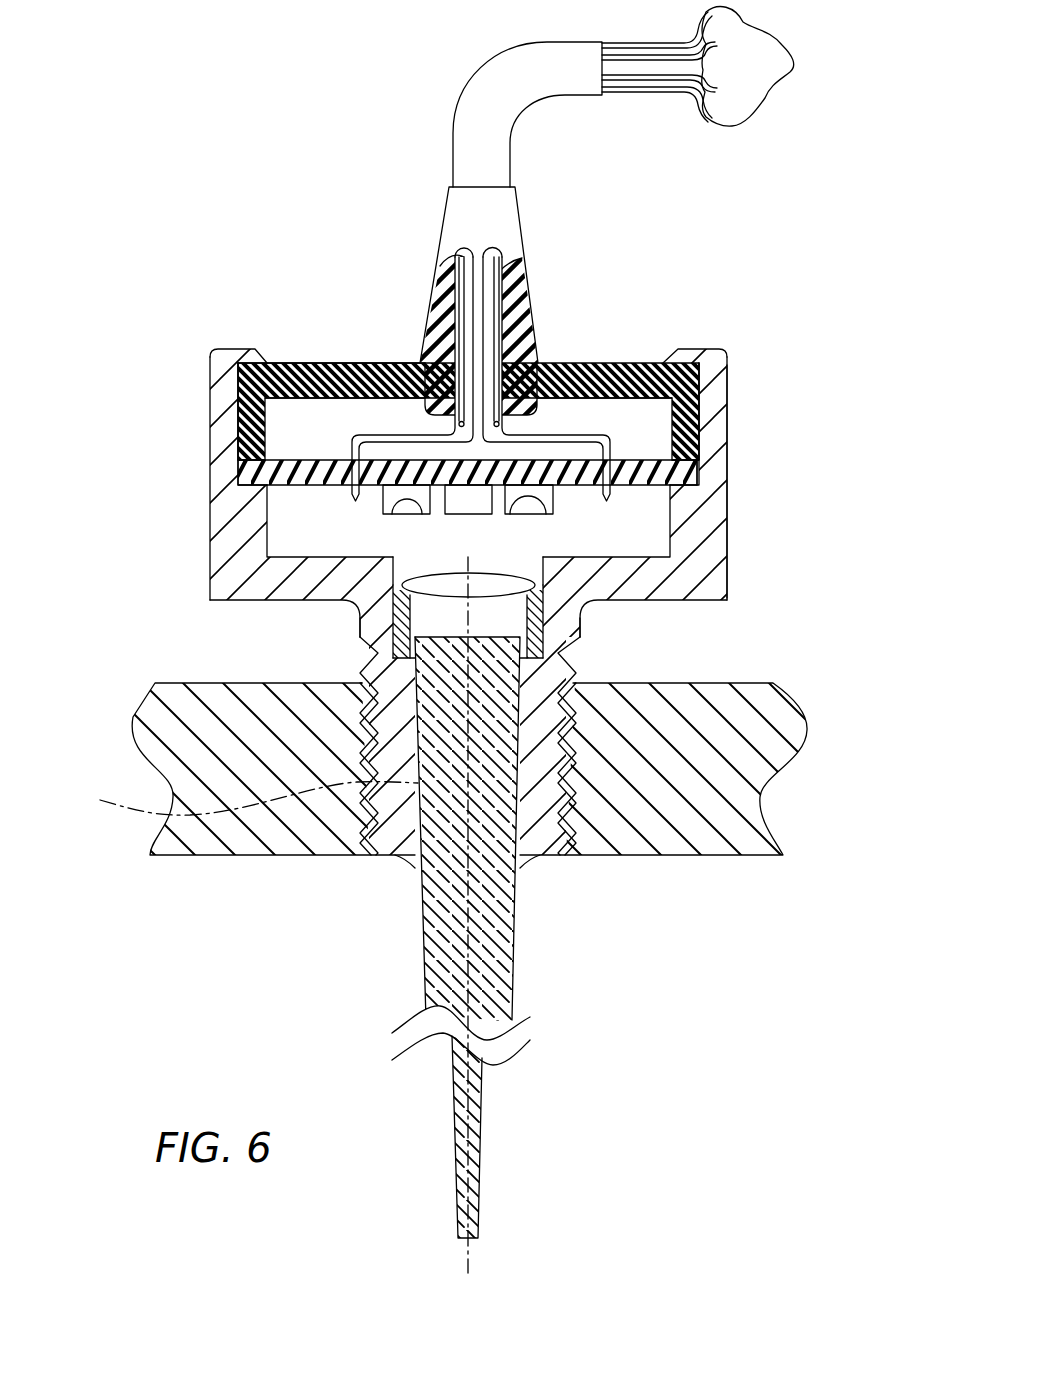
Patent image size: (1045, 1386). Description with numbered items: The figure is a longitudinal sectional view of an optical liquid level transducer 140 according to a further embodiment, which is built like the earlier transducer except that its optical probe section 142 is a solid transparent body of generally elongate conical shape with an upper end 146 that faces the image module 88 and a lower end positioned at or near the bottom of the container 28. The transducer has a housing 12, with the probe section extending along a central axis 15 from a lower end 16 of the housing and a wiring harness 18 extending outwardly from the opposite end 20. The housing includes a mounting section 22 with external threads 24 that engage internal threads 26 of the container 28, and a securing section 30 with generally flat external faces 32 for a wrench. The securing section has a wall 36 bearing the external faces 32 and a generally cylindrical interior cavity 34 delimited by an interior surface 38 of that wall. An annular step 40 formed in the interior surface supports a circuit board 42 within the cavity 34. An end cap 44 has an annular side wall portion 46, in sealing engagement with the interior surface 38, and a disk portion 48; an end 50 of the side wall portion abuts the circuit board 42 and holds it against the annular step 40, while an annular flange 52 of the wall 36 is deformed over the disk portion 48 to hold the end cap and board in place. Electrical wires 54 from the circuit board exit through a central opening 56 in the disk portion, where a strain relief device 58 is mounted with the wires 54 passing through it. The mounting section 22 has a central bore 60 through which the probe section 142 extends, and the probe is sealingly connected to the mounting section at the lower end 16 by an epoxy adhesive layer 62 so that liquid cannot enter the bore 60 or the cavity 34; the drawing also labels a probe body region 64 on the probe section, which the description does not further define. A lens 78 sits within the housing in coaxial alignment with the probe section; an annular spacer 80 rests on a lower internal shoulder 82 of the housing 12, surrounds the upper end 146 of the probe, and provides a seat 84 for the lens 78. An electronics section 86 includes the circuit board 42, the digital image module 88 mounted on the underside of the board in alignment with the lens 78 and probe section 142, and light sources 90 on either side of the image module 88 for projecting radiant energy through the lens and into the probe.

The housing 12 is at (200, 432).
The central axis 15 is at (241, 799).
The lower end 16 is at (540, 858).
The wiring harness 18 is at (445, 102).
The opposite end 20 is at (712, 352).
The mounting section 22 is at (598, 702).
The external threads 24 is at (385, 860).
The internal threads 26 is at (370, 845).
The container 28 is at (248, 855).
The securing section 30 is at (727, 432).
The external faces 32 is at (210, 490).
The interior cavity 34 is at (310, 425).
The wall 36 is at (222, 398).
The interior surface 38 is at (267, 535).
The annular step 40 is at (243, 467).
The circuit board 42 is at (630, 470).
The end cap 44 is at (628, 358).
The annular side wall portion 46 is at (705, 400).
The disk portion 48 is at (388, 363).
The end of annular side wall portion 50 is at (703, 470).
The annular flange 52 is at (258, 357).
The electrical wires 54 is at (772, 80).
The central opening 56 is at (558, 370).
The strain relief device 58 is at (510, 222).
The central bore 60 is at (562, 800).
The epoxy adhesive layer 62 is at (406, 895).
The probe tube 64 is at (428, 945).
The lens 78 is at (505, 576).
The annular spacer 80 is at (360, 640).
The lower internal shoulder 82 is at (362, 672).
The seat 84 is at (525, 618).
The electronics section 86 is at (655, 505).
The digital image module 88 is at (470, 512).
The light sources 90 is at (407, 510).
The optical liquid level transducer 140 is at (198, 172).
The optical probe section 142 is at (415, 985).
The upper end 146 is at (393, 652).